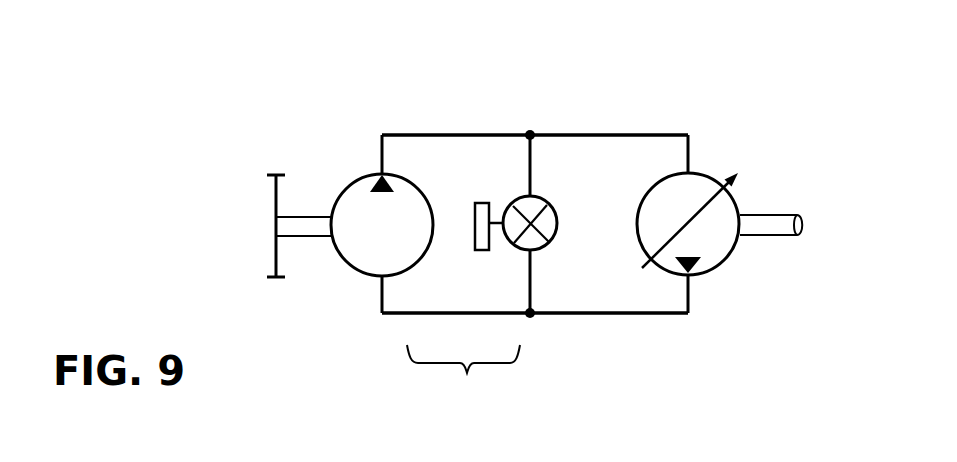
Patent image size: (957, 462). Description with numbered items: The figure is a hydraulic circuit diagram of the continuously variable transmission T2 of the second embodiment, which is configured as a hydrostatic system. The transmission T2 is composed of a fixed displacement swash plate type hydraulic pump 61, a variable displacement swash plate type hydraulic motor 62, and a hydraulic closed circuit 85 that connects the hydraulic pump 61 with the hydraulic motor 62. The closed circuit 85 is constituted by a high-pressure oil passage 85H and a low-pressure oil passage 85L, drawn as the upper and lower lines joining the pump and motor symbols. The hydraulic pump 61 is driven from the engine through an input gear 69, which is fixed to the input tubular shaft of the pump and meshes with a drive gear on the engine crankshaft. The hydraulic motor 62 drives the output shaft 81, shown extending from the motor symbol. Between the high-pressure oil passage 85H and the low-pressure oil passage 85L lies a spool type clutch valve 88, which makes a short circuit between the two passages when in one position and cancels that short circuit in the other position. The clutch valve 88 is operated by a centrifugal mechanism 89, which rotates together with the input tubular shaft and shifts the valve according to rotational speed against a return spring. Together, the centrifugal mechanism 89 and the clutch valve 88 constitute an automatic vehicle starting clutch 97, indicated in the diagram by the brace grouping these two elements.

The continuously variable transmission T2 is at (609, 105).
The hydraulic closed circuit 85 is at (457, 132).
The high-pressure oil passage 85H is at (490, 135).
The low-pressure oil passage 85L is at (587, 313).
The hydraulic pump 61 is at (357, 262).
The hydraulic motor 62 is at (727, 248).
The input gear 69 is at (272, 173).
The output shaft 81 is at (763, 213).
The clutch valve 88 is at (522, 245).
The centrifugal mechanism 89 is at (477, 232).
The automatic vehicle starting clutch 97 is at (463, 375).